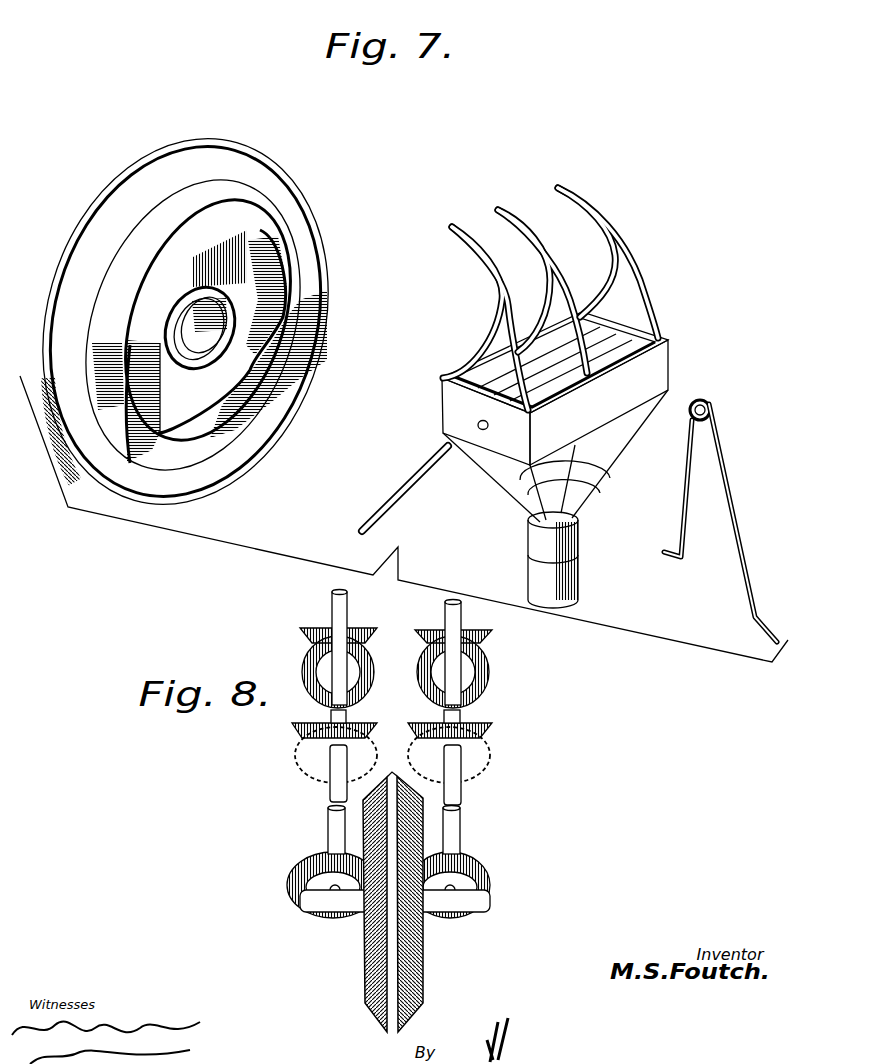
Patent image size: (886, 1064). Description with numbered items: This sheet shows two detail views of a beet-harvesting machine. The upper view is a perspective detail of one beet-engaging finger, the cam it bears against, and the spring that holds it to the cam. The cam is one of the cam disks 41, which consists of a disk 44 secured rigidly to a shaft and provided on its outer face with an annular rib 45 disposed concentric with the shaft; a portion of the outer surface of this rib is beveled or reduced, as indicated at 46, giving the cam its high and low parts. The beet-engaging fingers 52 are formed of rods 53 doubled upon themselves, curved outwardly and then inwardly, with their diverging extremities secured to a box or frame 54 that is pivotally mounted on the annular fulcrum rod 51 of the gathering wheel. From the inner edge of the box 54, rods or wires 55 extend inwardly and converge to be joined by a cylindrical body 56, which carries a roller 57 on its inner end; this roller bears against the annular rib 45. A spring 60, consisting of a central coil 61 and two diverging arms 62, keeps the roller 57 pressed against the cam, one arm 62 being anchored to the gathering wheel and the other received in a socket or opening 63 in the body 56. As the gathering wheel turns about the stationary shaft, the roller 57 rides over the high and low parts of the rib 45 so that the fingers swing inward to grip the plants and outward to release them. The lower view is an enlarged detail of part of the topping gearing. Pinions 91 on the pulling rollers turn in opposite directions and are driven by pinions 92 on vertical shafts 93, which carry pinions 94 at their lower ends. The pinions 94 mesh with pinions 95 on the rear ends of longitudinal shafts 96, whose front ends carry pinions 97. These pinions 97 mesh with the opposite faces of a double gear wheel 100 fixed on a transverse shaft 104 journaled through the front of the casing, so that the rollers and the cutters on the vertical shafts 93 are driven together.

In FIG. 7, the cam disk 41 is at (186, 322).
In FIG. 7, the disk 44 is at (277, 181).
In FIG. 7, the annular rib 45 is at (313, 264).
In FIG. 7, the beveled or reduced portion 46 is at (228, 415).
In FIG. 7, the annular fulcrum rod 51 is at (403, 494).
In FIG. 7, the beet-engaging fingers 52 is at (550, 288).
In FIG. 7, the rods 53 is at (452, 225).
In FIG. 7, the box or frame 54 is at (555, 388).
In FIG. 7, the rods or wires 55 is at (585, 476).
In FIG. 7, the cylindrical body 56 is at (578, 528).
In FIG. 7, the roller 57 is at (566, 560).
In FIG. 7, the spring 60 is at (720, 507).
In FIG. 7, the central coil 61 is at (711, 403).
In FIG. 7, the arms 62 is at (730, 488).
In FIG. 7, the socket or opening 63 is at (567, 542).
In FIG. 8, the pinions 91 is at (312, 672).
In FIG. 8, the pinions 92 is at (312, 628).
In FIG. 8, the vertical shafts 93 is at (450, 673).
In FIG. 8, the pinions 94 is at (300, 730).
In FIG. 8, the pinions 95 is at (300, 757).
In FIG. 8, the shafts 96 is at (334, 829).
In FIG. 8, the pinions 97 is at (300, 876).
In FIG. 8, the double gear wheel 100 is at (426, 958).
In FIG. 8, the transverse shaft 104 is at (339, 905).